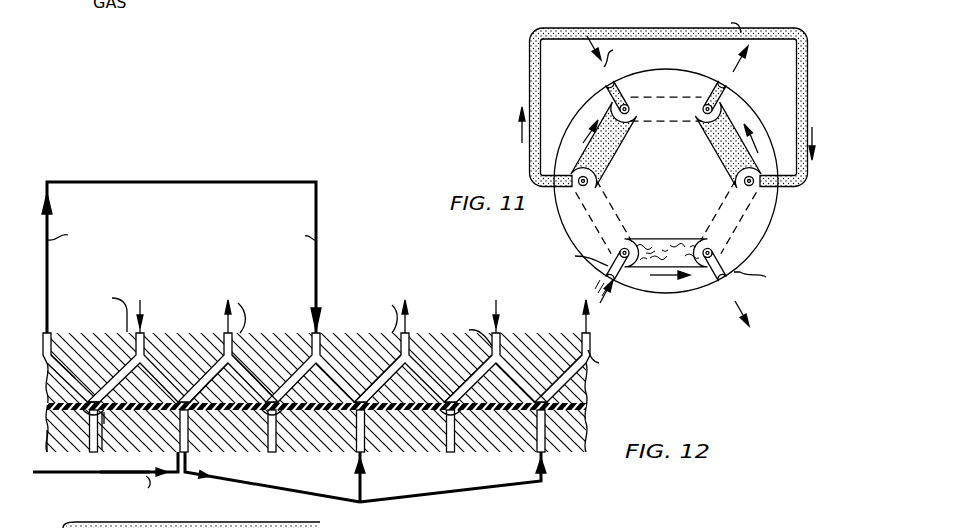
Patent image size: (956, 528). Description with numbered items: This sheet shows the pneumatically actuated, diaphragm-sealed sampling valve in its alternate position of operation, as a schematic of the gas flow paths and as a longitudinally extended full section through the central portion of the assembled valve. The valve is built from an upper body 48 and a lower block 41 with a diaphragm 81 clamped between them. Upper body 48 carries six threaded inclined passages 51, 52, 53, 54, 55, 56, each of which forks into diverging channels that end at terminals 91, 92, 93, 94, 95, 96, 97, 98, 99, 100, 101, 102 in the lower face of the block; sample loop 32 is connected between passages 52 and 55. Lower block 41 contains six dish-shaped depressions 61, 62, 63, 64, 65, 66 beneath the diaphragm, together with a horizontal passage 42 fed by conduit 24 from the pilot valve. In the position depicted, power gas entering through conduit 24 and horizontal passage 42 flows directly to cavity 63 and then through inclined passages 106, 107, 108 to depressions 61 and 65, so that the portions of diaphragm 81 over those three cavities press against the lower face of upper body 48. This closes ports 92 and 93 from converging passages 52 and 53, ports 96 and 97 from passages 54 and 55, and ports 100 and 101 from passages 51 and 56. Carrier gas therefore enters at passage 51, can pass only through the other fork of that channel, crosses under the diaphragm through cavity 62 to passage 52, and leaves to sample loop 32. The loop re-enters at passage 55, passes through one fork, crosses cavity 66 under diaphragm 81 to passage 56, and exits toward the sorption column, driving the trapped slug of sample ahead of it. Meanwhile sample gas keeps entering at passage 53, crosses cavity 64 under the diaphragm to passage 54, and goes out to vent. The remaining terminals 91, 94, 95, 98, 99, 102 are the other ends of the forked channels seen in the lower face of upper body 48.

In FIG. 11, the sample loop 32 is at (530, 66).
In FIG. 12, the sample loop 32 is at (185, 183).
In FIG. 11, the inclined passage 51 is at (603, 268).
In FIG. 12, the inclined passage 51 is at (138, 344).
In FIG. 11, the inclined passage 52 is at (566, 186).
In FIG. 12, the inclined passage 52 is at (50, 345).
In FIG. 11, the inclined passage 53 is at (608, 90).
In FIG. 12, the inclined passage 53 is at (494, 355).
In FIG. 11, the inclined passage 54 is at (734, 72).
In FIG. 12, the inclined passage 54 is at (401, 350).
In FIG. 11, the inclined passage 55 is at (775, 190).
In FIG. 12, the inclined passage 55 is at (312, 346).
In FIG. 11, the inclined passage 56 is at (726, 298).
In FIG. 12, the inclined passage 56 is at (224, 350).
In FIG. 12, the upper body 48 is at (58, 368).
In FIG. 12, the diaphragm 81 is at (70, 396).
In FIG. 12, the port 101 is at (205, 388).
In FIG. 12, the port 100 is at (207, 396).
In FIG. 12, the terminal of inclined passage 98 is at (283, 386).
In FIG. 12, the terminal of inclined passage 99 is at (285, 398).
In FIG. 12, the port 97 is at (346, 390).
In FIG. 12, the port 96 is at (384, 398).
In FIG. 12, the terminal of inclined passage 94 is at (462, 390).
In FIG. 12, the terminal of inclined passage 95 is at (462, 400).
In FIG. 12, the port 93 is at (525, 393).
In FIG. 12, the port 92 is at (563, 402).
In FIG. 12, the cavity 62 is at (82, 412).
In FIG. 12, the depression 61 is at (181, 412).
In FIG. 12, the cavity 66 is at (270, 413).
In FIG. 12, the depression 65 is at (359, 413).
In FIG. 12, the cavity 64 is at (435, 414).
In FIG. 12, the cavity 63 is at (540, 413).
In FIG. 12, the lower block 41 is at (48, 434).
In FIG. 12, the terminal of inclined passage 91 is at (99, 436).
In FIG. 12, the terminal of inclined passage 102 is at (107, 420).
In FIG. 12, the conduit 24 is at (36, 472).
In FIG. 12, the horizontal passage 42 is at (128, 456).
In FIG. 12, the inclined passage 106 is at (186, 470).
In FIG. 12, the inclined passage 108 is at (362, 466).
In FIG. 12, the inclined passage 107 is at (546, 466).